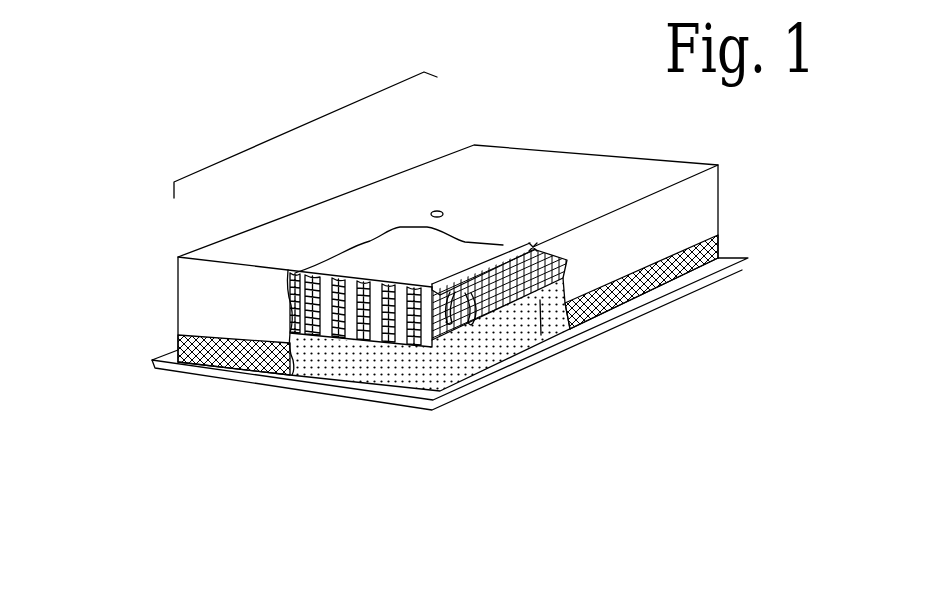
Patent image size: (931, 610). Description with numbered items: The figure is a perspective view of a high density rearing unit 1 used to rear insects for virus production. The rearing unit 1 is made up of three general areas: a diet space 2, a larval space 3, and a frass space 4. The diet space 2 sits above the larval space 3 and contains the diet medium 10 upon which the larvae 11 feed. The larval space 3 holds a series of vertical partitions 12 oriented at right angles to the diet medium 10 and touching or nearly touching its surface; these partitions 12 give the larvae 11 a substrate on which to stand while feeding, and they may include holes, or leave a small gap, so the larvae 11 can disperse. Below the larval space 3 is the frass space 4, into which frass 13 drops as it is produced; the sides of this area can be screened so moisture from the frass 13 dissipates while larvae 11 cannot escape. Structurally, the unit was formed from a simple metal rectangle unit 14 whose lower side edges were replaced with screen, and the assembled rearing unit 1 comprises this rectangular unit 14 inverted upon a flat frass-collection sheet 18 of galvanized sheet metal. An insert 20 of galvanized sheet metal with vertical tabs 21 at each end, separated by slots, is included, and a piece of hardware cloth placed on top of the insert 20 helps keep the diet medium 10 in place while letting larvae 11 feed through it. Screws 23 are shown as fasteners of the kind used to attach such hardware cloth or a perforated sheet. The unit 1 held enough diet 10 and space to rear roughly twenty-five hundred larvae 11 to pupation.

The rearing unit 1 is at (300, 127).
The diet space 2 is at (535, 247).
The larval space 3 is at (290, 318).
The frass space 4 is at (541, 335).
The diet medium 10 is at (508, 245).
The larvae 11 is at (442, 337).
The vertical partitions 12 is at (503, 386).
The frass 13 is at (353, 370).
The metal rectangle unit 14 is at (643, 157).
The frass-collection sheet 18 is at (733, 264).
The insert 20 is at (350, 260).
The vertical tabs 21 is at (393, 340).
The screws 23 is at (441, 211).